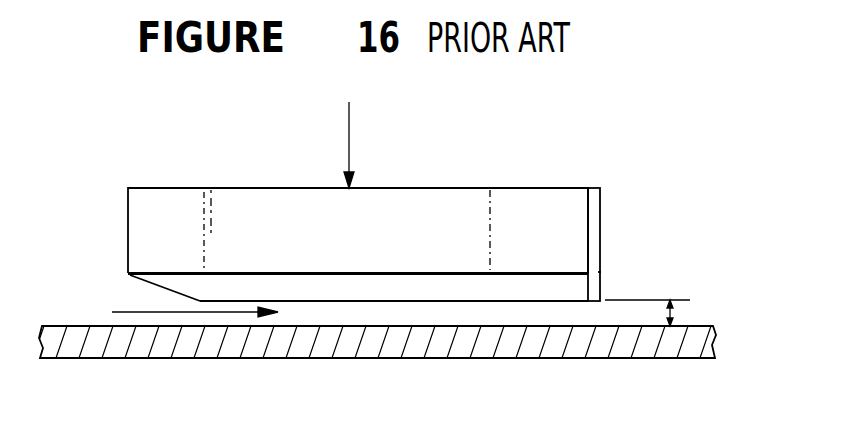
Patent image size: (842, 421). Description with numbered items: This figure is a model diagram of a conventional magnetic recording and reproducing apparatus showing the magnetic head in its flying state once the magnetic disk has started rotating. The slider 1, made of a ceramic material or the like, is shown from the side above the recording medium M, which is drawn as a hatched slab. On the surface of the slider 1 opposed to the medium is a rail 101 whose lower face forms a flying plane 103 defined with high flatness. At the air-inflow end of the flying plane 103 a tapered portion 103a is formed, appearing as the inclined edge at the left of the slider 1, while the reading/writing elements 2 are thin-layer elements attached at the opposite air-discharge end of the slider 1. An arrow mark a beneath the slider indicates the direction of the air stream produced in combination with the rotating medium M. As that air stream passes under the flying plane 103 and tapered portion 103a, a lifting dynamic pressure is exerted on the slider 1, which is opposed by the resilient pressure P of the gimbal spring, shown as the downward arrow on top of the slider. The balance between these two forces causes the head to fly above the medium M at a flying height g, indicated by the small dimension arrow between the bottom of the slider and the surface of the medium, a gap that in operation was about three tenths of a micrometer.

The flying plane 103 is at (390, 268).
The tapered portion 103a is at (155, 277).
The rail 101 is at (515, 287).
The slider 1 is at (574, 223).
The reading/writing elements 2 is at (602, 276).
The resilient pressure of the gimbal spring P is at (350, 145).
The direction of air stream a is at (145, 312).
The flying height g is at (674, 312).
The recording medium M is at (493, 342).